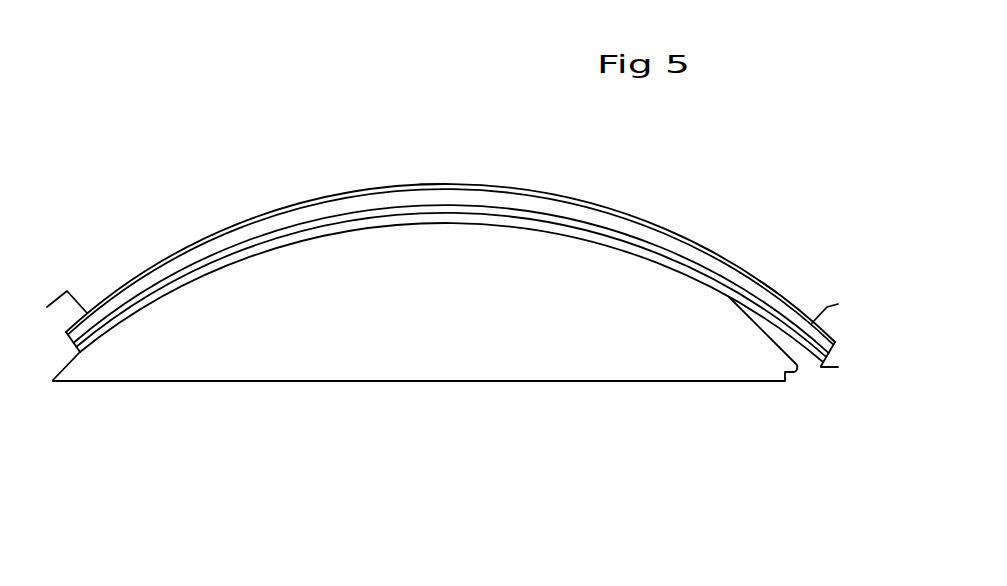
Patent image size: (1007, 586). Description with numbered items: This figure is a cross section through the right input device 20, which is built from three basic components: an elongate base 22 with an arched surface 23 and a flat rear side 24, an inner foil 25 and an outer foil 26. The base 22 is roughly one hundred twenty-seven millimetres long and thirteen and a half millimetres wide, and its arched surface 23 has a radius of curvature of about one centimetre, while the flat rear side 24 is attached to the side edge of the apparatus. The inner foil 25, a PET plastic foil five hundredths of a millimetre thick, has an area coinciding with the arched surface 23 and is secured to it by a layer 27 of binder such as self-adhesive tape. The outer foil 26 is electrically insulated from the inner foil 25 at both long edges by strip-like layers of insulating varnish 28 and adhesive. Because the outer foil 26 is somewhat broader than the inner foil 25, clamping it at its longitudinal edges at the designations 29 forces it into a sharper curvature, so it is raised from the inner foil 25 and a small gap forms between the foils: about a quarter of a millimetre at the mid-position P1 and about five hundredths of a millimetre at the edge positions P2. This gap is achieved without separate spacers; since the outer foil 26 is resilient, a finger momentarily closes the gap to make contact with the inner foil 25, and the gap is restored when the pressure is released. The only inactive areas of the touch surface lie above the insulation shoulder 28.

The input device 20 is at (360, 99).
The base 22 is at (427, 365).
The arched surface 23 is at (603, 248).
The rear side 24 is at (333, 381).
The inner foil 25 is at (318, 218).
The outer foil 26 is at (275, 211).
The layer of binder 27 is at (523, 225).
The insulating varnish 28 is at (102, 312).
The clamping designations 29 is at (72, 288).
The mid-position P1 is at (428, 193).
The edge positions P2 is at (769, 295).